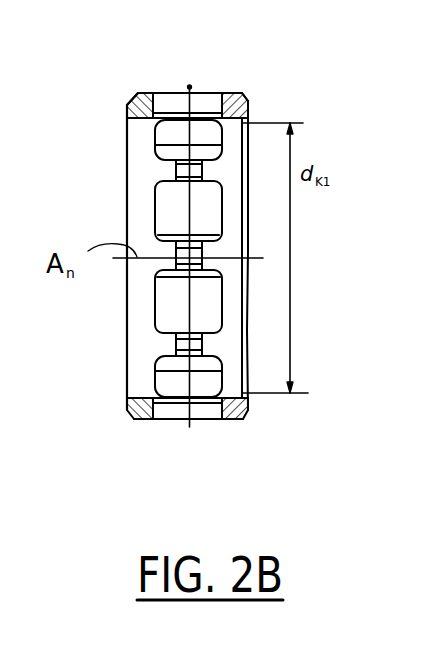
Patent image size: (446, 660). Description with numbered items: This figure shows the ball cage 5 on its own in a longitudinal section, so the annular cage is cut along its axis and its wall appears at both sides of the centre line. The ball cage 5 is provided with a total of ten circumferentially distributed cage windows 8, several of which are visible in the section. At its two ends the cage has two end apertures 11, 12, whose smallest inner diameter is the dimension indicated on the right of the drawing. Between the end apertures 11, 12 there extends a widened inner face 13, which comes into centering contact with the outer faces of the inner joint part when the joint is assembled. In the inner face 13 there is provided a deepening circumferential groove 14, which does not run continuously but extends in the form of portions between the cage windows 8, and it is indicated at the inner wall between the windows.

The ball cage 5 is at (228, 82).
The cage window 8 is at (170, 213).
The end aperture 11 is at (137, 302).
The end aperture 12 is at (248, 372).
The inner face 13 is at (138, 361).
The circumferential groove 14 is at (180, 167).